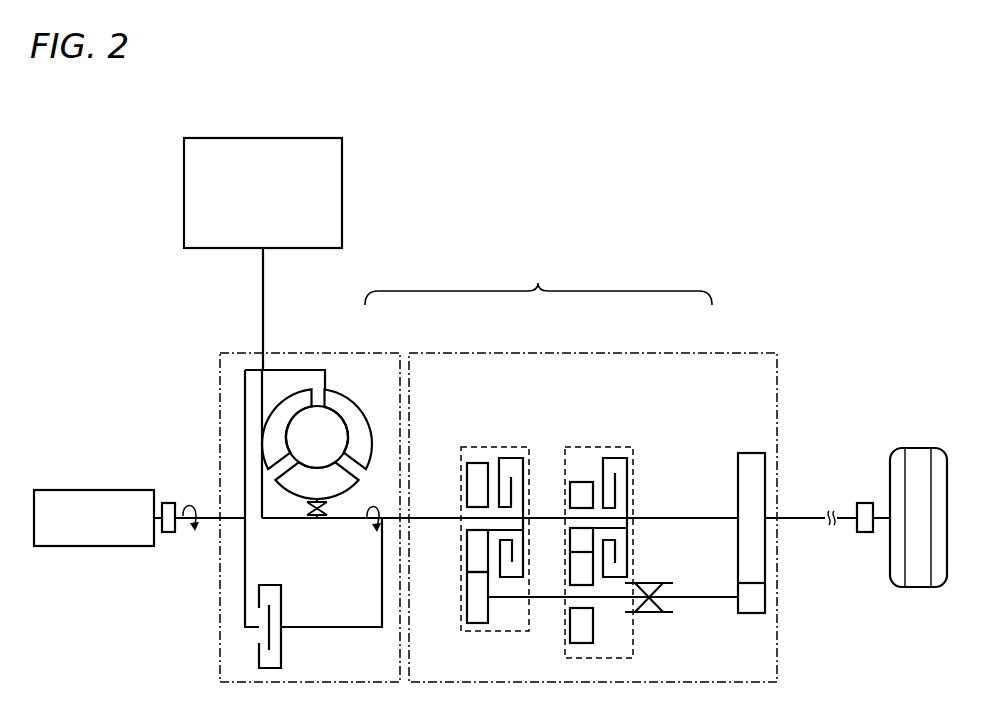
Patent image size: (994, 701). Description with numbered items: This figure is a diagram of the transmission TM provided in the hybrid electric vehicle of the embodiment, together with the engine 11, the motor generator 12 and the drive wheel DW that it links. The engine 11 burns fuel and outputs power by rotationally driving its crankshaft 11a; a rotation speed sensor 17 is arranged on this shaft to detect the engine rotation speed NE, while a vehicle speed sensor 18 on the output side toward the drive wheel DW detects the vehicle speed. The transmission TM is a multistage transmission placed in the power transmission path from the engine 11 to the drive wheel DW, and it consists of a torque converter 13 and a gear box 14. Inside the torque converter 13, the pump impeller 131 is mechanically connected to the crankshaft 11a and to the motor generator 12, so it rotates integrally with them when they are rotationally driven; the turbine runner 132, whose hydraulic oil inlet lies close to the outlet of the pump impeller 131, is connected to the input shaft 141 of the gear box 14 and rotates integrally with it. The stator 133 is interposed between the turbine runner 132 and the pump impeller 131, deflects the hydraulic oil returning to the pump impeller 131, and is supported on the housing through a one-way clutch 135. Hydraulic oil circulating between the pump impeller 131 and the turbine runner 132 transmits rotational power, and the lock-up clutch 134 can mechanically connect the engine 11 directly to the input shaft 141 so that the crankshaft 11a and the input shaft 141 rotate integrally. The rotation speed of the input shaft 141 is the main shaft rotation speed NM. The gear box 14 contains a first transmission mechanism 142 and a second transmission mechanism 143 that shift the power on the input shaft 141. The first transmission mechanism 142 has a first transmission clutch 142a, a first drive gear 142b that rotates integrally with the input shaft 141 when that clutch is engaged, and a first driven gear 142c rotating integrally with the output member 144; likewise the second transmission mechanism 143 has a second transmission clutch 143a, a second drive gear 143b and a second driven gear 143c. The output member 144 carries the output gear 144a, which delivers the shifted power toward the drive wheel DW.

The engine 11 is at (112, 490).
The crankshaft 11a is at (210, 518).
The motor generator 12 is at (292, 138).
The torque converter 13 is at (392, 352).
The gear box 14 is at (703, 352).
The rotation speed sensor 17 is at (170, 503).
The vehicle speed sensor 18 is at (865, 502).
The pump impeller 131 is at (347, 399).
The turbine runner 132 is at (271, 412).
The stator 133 is at (320, 467).
The lock-up clutch 134 is at (283, 661).
The one-way clutch 135 is at (307, 512).
The input shaft 141 is at (427, 517).
The first transmission mechanism 142 is at (606, 538).
The first transmission clutch 142a is at (615, 458).
The first drive gear 142b is at (578, 482).
The first driven gear 142c is at (566, 625).
The second transmission mechanism 143 is at (478, 529).
The second transmission clutch 143a is at (512, 458).
The second drive gear 143b is at (467, 558).
The second driven gear 143c is at (477, 623).
The output member 144 is at (683, 600).
The output gear 144a is at (743, 615).
The transmission TM is at (538, 282).
The drive wheel DW is at (923, 448).
The engine rotation speed NE is at (189, 506).
The main shaft rotation speed NM is at (369, 507).